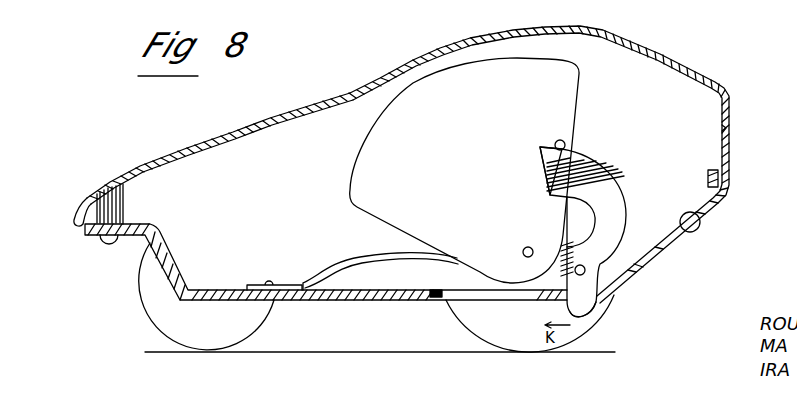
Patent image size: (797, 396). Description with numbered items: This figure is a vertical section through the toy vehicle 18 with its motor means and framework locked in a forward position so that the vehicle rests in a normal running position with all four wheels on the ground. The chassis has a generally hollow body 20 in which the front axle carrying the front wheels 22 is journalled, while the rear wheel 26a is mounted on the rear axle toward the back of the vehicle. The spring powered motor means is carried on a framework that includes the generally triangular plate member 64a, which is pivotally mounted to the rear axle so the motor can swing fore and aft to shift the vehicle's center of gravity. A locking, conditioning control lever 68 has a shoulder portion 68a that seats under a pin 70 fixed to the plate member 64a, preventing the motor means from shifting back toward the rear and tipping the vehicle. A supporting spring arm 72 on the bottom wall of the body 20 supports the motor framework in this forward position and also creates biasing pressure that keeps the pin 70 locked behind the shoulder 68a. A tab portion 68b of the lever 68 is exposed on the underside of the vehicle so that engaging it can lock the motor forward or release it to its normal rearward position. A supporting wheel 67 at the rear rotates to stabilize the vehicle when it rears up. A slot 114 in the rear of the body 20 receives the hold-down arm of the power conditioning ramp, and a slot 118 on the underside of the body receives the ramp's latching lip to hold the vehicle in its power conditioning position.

The toy vehicle 18 is at (640, 25).
The body 20 is at (297, 108).
The front wheels 22 is at (148, 313).
The rear wheel 26a is at (503, 360).
The plate member 64a is at (515, 68).
The supporting wheel 67 is at (700, 234).
The locking, conditioning control lever 68 is at (617, 222).
The shoulder portion 68a is at (575, 150).
The tab portion 68b is at (597, 313).
The pin 70 is at (571, 136).
The supporting spring arm 72 is at (396, 257).
The slot 114 is at (730, 130).
The slot 118 is at (440, 302).